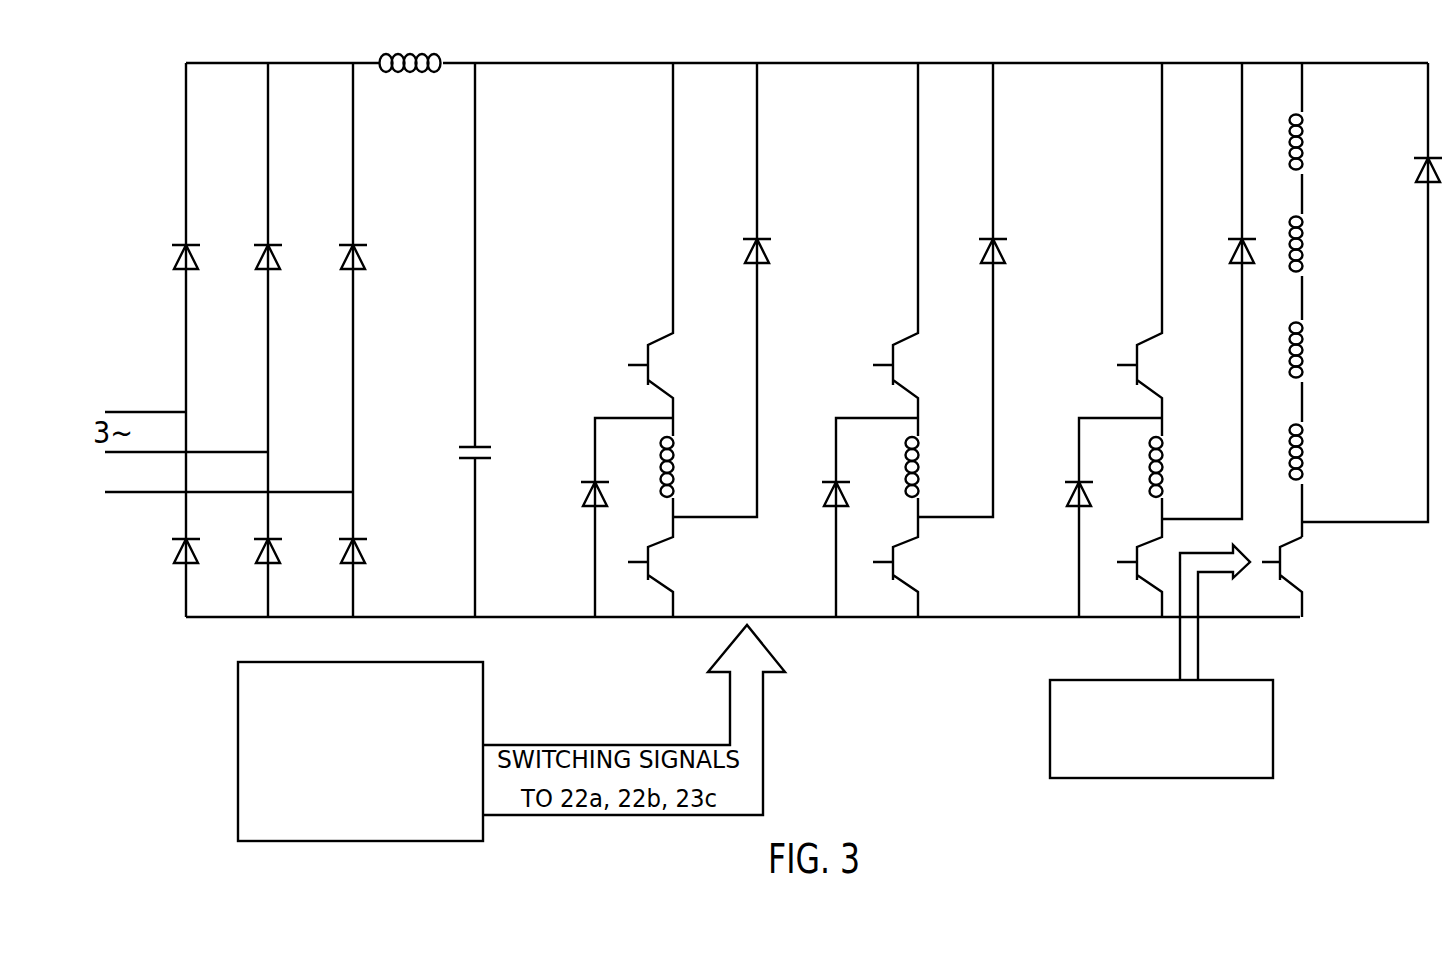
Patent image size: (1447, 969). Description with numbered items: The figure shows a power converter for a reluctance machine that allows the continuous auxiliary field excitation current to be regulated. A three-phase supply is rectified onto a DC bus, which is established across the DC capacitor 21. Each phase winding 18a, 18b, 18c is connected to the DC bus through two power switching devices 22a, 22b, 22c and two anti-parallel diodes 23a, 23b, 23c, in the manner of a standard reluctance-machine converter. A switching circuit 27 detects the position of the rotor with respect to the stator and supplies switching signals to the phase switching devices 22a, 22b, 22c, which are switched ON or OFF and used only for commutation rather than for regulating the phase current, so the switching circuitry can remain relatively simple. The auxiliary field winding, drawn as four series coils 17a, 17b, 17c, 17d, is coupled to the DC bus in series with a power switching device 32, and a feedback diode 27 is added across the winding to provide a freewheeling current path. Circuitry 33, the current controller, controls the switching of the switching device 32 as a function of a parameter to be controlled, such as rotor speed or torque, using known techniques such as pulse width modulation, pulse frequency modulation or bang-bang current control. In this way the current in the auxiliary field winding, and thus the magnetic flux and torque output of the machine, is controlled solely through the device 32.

The auxiliary field winding 17a is at (1357, 146).
The auxiliary field winding 17b is at (1320, 252).
The auxiliary field winding 17c is at (1319, 360).
The auxiliary field winding 17d is at (1324, 473).
The phase winding 18a is at (687, 467).
The phase winding 18b is at (932, 467).
The phase winding 18c is at (1178, 467).
The DC capacitor 21 is at (463, 438).
The power switching device 22a is at (625, 364).
The power switching device 22b is at (870, 364).
The power switching device 22c is at (1112, 364).
The anti-parallel diode 23a is at (738, 247).
The anti-parallel diode 23b is at (974, 247).
The anti-parallel diode 23c is at (1224, 247).
The switching circuit / feedback diode 27 is at (1421, 153).
The power switching device 32 is at (1292, 561).
The current controller circuitry 33 is at (1280, 709).